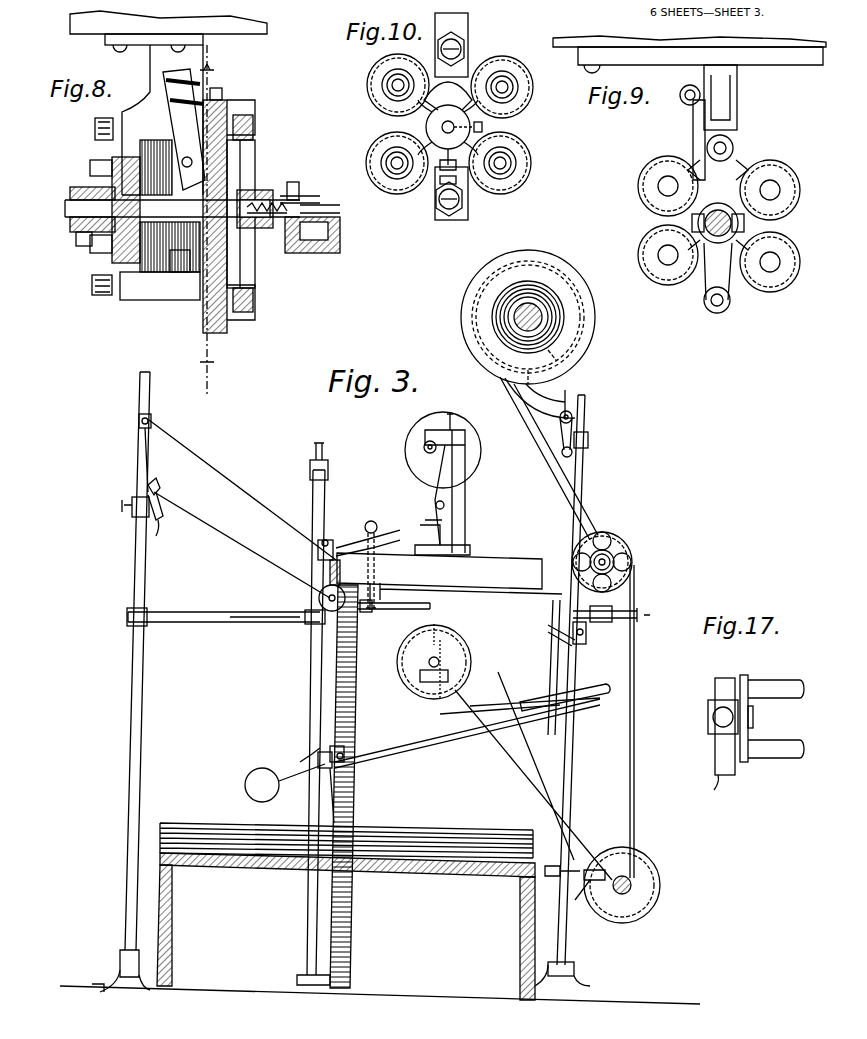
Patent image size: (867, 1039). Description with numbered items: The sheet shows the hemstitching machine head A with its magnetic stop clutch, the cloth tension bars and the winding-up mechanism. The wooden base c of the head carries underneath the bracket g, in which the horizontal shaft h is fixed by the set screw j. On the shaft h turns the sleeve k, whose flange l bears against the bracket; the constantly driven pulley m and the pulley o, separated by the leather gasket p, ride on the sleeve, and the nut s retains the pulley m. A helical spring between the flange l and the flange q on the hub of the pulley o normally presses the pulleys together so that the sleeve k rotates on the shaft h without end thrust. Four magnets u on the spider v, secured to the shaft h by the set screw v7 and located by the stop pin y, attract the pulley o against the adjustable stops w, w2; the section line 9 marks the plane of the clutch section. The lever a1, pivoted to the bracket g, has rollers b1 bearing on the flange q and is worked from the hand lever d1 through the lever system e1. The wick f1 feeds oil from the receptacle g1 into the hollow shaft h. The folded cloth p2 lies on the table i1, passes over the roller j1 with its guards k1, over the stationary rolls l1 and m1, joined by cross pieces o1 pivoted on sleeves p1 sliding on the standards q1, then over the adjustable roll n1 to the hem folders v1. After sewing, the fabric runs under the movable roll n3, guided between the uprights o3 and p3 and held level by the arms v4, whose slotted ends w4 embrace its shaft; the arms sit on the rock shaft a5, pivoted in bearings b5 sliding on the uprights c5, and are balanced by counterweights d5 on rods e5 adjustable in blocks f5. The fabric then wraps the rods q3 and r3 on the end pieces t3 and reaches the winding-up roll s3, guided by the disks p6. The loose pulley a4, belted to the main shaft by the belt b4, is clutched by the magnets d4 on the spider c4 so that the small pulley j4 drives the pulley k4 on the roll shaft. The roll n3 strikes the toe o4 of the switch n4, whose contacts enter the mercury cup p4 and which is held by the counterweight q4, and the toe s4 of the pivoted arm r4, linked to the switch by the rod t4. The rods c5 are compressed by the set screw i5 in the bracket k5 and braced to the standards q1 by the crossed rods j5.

In FIG. 8, the section line 9 is at (210, 219).
In FIG. 8, the bracket g is at (152, 64).
In FIG. 10, the bracket g is at (466, 52).
In FIG. 9, the bracket g is at (740, 96).
In FIG. 3, the bracket g is at (428, 597).
In FIG. 8, the lever a1 is at (170, 112).
In FIG. 9, the lever a1 is at (693, 126).
In FIG. 8, the gasket p is at (225, 305).
In FIG. 8, the stop w is at (215, 95).
In FIG. 9, the stop w is at (733, 150).
In FIG. 8, the second pulley o is at (234, 110).
In FIG. 3, the second pulley o is at (462, 650).
In FIG. 8, the first pulley m is at (253, 128).
In FIG. 3, the first pulley m is at (452, 632).
In FIG. 8, the sleeve k is at (250, 192).
In FIG. 8, the flange l is at (95, 190).
In FIG. 8, the spider v is at (75, 205).
In FIG. 10, the spider v is at (395, 125).
In FIG. 9, the spider v is at (700, 222).
In FIG. 8, the horizontal shaft h is at (72, 225).
In FIG. 10, the horizontal shaft h is at (440, 165).
In FIG. 9, the horizontal shaft h is at (735, 226).
In FIG. 8, the stop pin y is at (100, 142).
In FIG. 10, the stop pin y is at (478, 80).
In FIG. 8, the set screw j is at (90, 246).
In FIG. 8, the magnet u is at (135, 298).
In FIG. 10, the magnet u is at (508, 140).
In FIG. 9, the magnet u is at (650, 190).
In FIG. 8, the flange q is at (158, 284).
In FIG. 9, the flange q is at (726, 290).
In FIG. 8, the stop w2 is at (172, 272).
In FIG. 8, the nut s is at (272, 232).
In FIG. 8, the wick f1 is at (302, 198).
In FIG. 8, the oil receptacle g1 is at (318, 250).
In FIG. 10, the set screw v7 is at (456, 184).
In FIG. 9, the rollers b1 is at (748, 180).
In FIG. 3, the standards q1 is at (145, 632).
In FIG. 17, the standards q1 is at (724, 782).
In FIG. 3, the adjustable roll n1 is at (139, 424).
In FIG. 3, the sliding sleeve p1 is at (132, 510).
In FIG. 17, the sliding sleeve p1 is at (708, 712).
In FIG. 3, the stationary roll l1 is at (154, 486).
In FIG. 17, the stationary roll l1 is at (786, 680).
In FIG. 3, the cross piece o1 is at (164, 494).
In FIG. 17, the cross piece o1 is at (752, 738).
In FIG. 3, the stationary roll m1 is at (170, 535).
In FIG. 17, the stationary roll m1 is at (766, 758).
In FIG. 3, the cloth p2 is at (330, 553).
In FIG. 3, the table i1 is at (264, 872).
In FIG. 3, the upright rods c5 is at (352, 652).
In FIG. 3, the wooden base c is at (449, 581).
In FIG. 3, the set screw i5 is at (330, 565).
In FIG. 3, the guide k5 is at (318, 555).
In FIG. 3, the guards k1 is at (320, 598).
In FIG. 3, the fixed roller j1 is at (280, 622).
In FIG. 3, the crossed rods j5 is at (318, 626).
In FIG. 3, the hand-operated lever d1 is at (372, 530).
In FIG. 3, the hem folders v1 is at (376, 527).
In FIG. 3, the machine head A is at (458, 522).
In FIG. 3, the system of levers e1 is at (372, 612).
In FIG. 3, the disks p6 is at (463, 312).
In FIG. 3, the winding-up roll s3 is at (536, 305).
In FIG. 3, the pulley k4 is at (582, 350).
In FIG. 3, the rod t4 is at (585, 760).
In FIG. 3, the stationary rod q3 is at (572, 418).
In FIG. 3, the stationary rod r3 is at (588, 448).
In FIG. 3, the end pieces t3 is at (560, 440).
In FIG. 3, the upright p3 is at (576, 735).
In FIG. 3, the loose pulley a4 is at (634, 562).
In FIG. 3, the spider c4 is at (602, 532).
In FIG. 3, the electric magnets d4 is at (606, 550).
In FIG. 3, the small pulley j4 is at (624, 556).
In FIG. 3, the belt b4 is at (634, 770).
In FIG. 3, the pivoted arm r4 is at (582, 898).
In FIG. 3, the toe s4 is at (530, 890).
In FIG. 3, the counterweight q4 is at (616, 615).
In FIG. 3, the switch n4 is at (588, 642).
In FIG. 3, the projecting toe o4 is at (552, 628).
In FIG. 3, the mercury cup p4 is at (575, 640).
In FIG. 3, the upright o3 is at (567, 701).
In FIG. 3, the movable roll n3 is at (556, 704).
In FIG. 3, the slotted portion w4 is at (496, 706).
In FIG. 3, the guiding arms v4 is at (398, 750).
In FIG. 3, the short rods e5 is at (290, 774).
In FIG. 3, the counterweights d5 is at (275, 795).
In FIG. 3, the blocks f5 is at (338, 772).
In FIG. 3, the rock shaft a5 is at (344, 746).
In FIG. 3, the adjustable bearings b5 is at (314, 750).